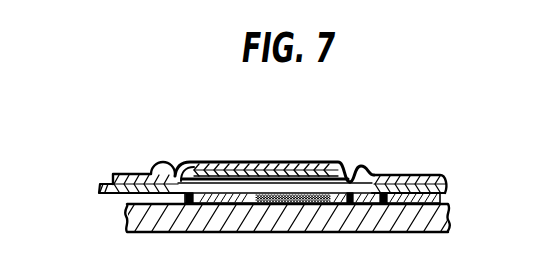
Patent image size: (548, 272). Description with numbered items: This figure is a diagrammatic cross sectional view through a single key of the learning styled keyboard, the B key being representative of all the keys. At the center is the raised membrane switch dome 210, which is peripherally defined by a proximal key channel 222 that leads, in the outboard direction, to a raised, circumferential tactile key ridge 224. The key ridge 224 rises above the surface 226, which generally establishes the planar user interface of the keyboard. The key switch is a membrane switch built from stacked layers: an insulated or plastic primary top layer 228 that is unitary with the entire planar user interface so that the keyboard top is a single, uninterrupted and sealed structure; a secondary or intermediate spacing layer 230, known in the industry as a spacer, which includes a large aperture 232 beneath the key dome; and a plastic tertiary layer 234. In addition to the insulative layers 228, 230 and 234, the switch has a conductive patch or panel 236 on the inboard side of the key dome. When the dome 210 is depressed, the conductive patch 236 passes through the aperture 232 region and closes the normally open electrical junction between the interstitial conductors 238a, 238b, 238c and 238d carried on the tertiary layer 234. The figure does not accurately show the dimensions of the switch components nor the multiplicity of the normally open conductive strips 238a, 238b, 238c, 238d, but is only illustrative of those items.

The membrane switch dome 210 is at (318, 170).
The proximal key channel region 222 is at (355, 172).
The tactile key ridge 224 is at (372, 168).
The surface 226 is at (423, 175).
The top layer 228 is at (137, 171).
The spacing layer 230 is at (93, 186).
The aperture 232 is at (232, 182).
The tertiary layer 234 is at (121, 216).
The conductive patch 236 is at (268, 174).
The interstitial conductor 238a is at (189, 200).
The interstitial conductor 238b is at (249, 200).
The interstitial conductor 238c is at (342, 200).
The interstitial conductor 238d is at (398, 200).